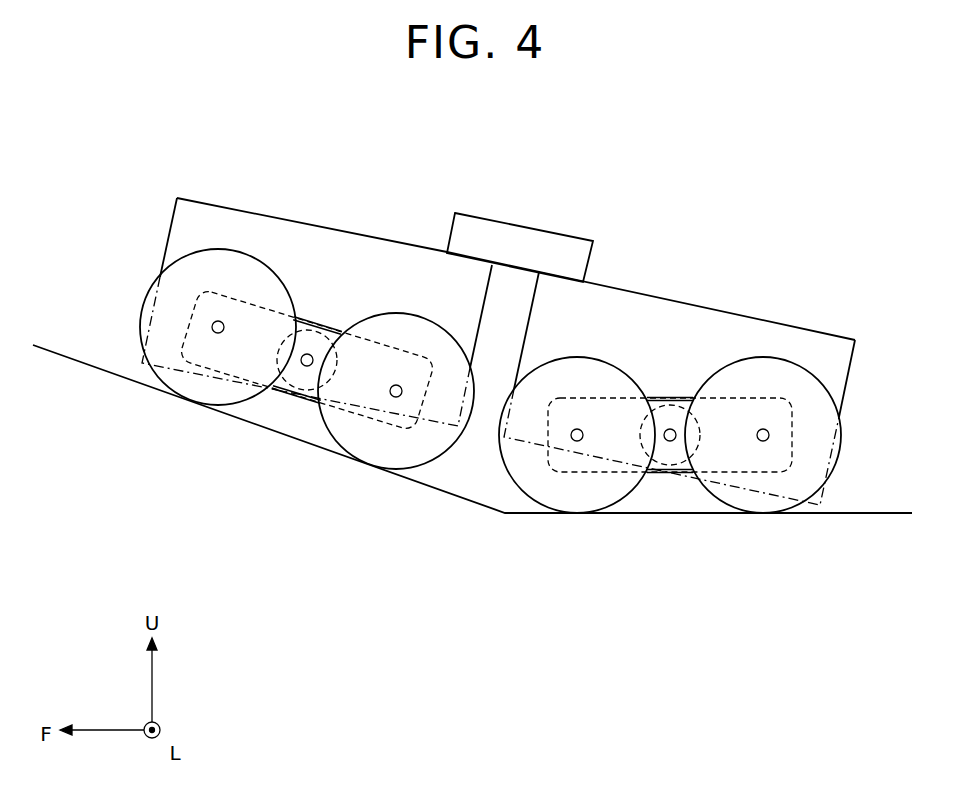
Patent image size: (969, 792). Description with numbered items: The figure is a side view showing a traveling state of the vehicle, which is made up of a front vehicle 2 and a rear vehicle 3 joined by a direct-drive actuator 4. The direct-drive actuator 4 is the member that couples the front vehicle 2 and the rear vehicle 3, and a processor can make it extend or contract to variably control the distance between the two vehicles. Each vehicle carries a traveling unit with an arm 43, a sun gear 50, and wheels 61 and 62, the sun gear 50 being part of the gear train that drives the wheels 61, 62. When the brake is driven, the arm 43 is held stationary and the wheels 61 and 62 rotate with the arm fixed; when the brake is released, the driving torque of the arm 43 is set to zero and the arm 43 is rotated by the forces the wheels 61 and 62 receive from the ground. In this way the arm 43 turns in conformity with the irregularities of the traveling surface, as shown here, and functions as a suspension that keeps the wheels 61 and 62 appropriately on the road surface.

The front vehicle 2 is at (333, 262).
The rear vehicle 3 is at (720, 340).
The direct-drive actuator 4 is at (537, 242).
The arm 43 is at (235, 293).
The sun gear 50 is at (303, 375).
The wheel 61 is at (383, 445).
The wheel 62 is at (193, 390).